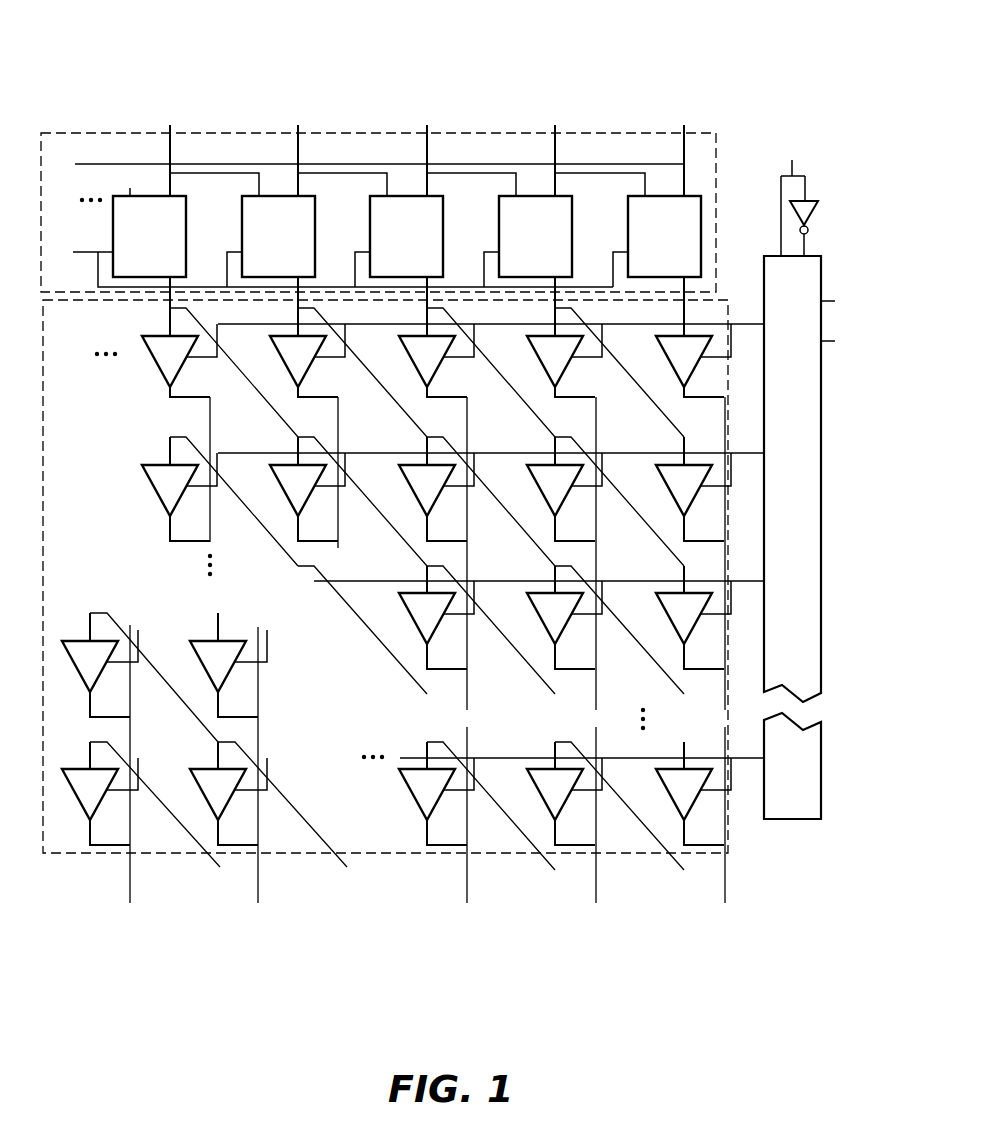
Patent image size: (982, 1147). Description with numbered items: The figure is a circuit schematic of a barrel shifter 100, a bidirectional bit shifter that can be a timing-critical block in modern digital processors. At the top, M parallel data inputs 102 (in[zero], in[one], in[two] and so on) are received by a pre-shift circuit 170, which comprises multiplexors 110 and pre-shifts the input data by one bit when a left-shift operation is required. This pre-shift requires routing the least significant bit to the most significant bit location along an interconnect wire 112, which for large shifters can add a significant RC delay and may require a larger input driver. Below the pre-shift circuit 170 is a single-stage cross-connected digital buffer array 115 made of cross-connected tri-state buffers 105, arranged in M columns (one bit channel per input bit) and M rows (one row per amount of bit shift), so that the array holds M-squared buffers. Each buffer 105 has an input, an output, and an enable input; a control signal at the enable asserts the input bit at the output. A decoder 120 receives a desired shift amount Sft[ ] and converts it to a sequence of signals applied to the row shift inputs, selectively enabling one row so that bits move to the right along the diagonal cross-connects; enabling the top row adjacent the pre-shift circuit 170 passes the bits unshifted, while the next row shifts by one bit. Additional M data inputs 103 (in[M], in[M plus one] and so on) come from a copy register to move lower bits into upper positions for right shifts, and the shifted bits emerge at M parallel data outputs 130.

The barrel shifter 100 is at (141, 63).
The parallel data inputs 102 is at (530, 95).
The additional data inputs 103 is at (668, 903).
The tri-state buffers 105 is at (202, 639).
The multiplexors 110 is at (163, 244).
The interconnect wire 112 is at (620, 163).
The single-stage cross-connected digital buffer array 115 is at (78, 327).
The decoder 120 is at (807, 488).
The parallel data outputs 130 is at (458, 940).
The pre-shift circuit 170 is at (343, 159).